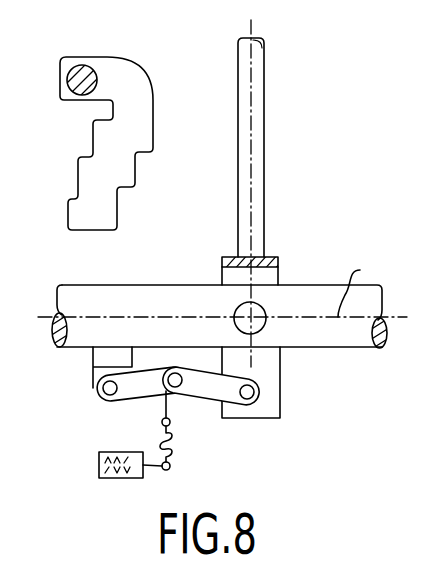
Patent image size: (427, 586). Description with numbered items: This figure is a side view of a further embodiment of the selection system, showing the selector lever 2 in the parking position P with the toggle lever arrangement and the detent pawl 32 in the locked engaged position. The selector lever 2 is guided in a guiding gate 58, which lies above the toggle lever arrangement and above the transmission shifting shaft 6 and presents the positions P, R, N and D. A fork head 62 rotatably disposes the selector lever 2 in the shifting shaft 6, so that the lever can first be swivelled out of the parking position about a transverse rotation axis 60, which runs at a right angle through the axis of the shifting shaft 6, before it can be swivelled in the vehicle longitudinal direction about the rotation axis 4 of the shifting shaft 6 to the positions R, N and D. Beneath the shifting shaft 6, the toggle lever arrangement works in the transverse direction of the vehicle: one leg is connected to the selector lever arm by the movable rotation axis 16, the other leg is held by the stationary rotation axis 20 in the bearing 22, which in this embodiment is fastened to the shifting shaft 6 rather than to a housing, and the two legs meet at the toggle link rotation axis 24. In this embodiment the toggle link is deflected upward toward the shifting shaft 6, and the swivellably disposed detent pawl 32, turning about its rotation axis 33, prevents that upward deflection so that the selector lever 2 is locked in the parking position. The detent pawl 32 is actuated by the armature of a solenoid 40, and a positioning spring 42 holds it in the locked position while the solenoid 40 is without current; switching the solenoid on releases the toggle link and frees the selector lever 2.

The selector lever 2 is at (82, 65).
The rotation axis 4 is at (355, 285).
The transmission shifting shaft 6 is at (312, 300).
The movable rotation axis 16 is at (282, 387).
The stationary rotation axis 20 is at (97, 388).
The bearing 22 is at (92, 367).
The toggle link rotation axis 24 is at (181, 386).
The detent pawl 32 is at (170, 464).
The rotation axis 33 is at (170, 422).
The solenoid 40 is at (75, 470).
The positioning spring 42 is at (98, 466).
The guiding gate 58 is at (153, 113).
The transverse rotation axis 60 is at (234, 312).
The fork head 62 is at (278, 258).